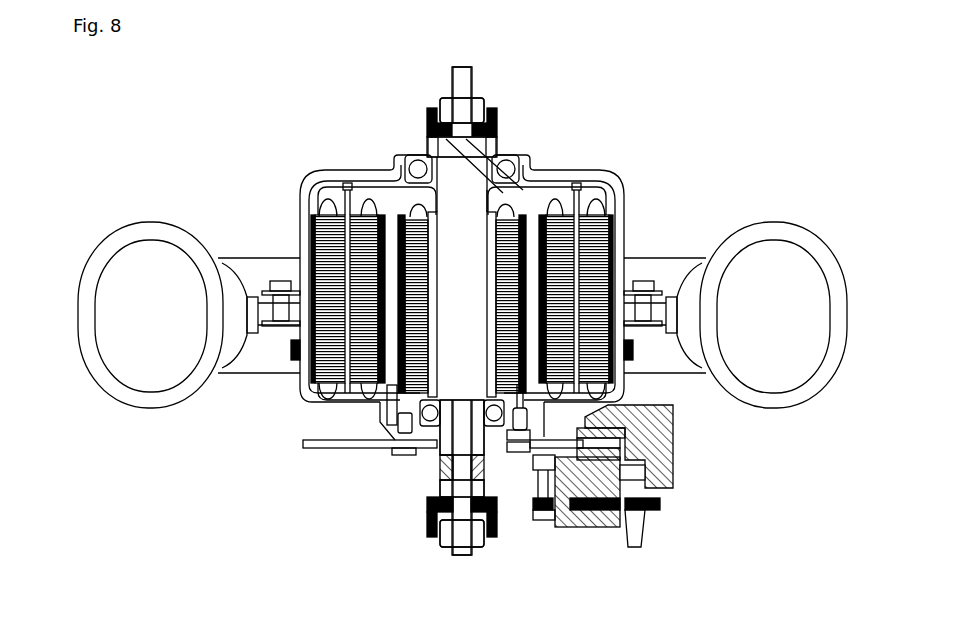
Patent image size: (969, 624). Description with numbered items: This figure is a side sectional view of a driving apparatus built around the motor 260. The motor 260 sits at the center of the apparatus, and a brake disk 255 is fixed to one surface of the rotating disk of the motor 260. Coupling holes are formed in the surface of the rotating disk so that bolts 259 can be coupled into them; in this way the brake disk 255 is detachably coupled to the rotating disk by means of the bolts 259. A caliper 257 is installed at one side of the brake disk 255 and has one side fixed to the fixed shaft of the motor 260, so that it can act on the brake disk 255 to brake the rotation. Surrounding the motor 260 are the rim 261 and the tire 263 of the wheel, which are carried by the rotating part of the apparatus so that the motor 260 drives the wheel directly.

The brake disk 255 is at (328, 447).
The caliper 257 is at (672, 488).
The bolt 259 is at (408, 448).
The motor 260 is at (656, 226).
The rim 261 is at (650, 352).
The tire 263 is at (813, 377).